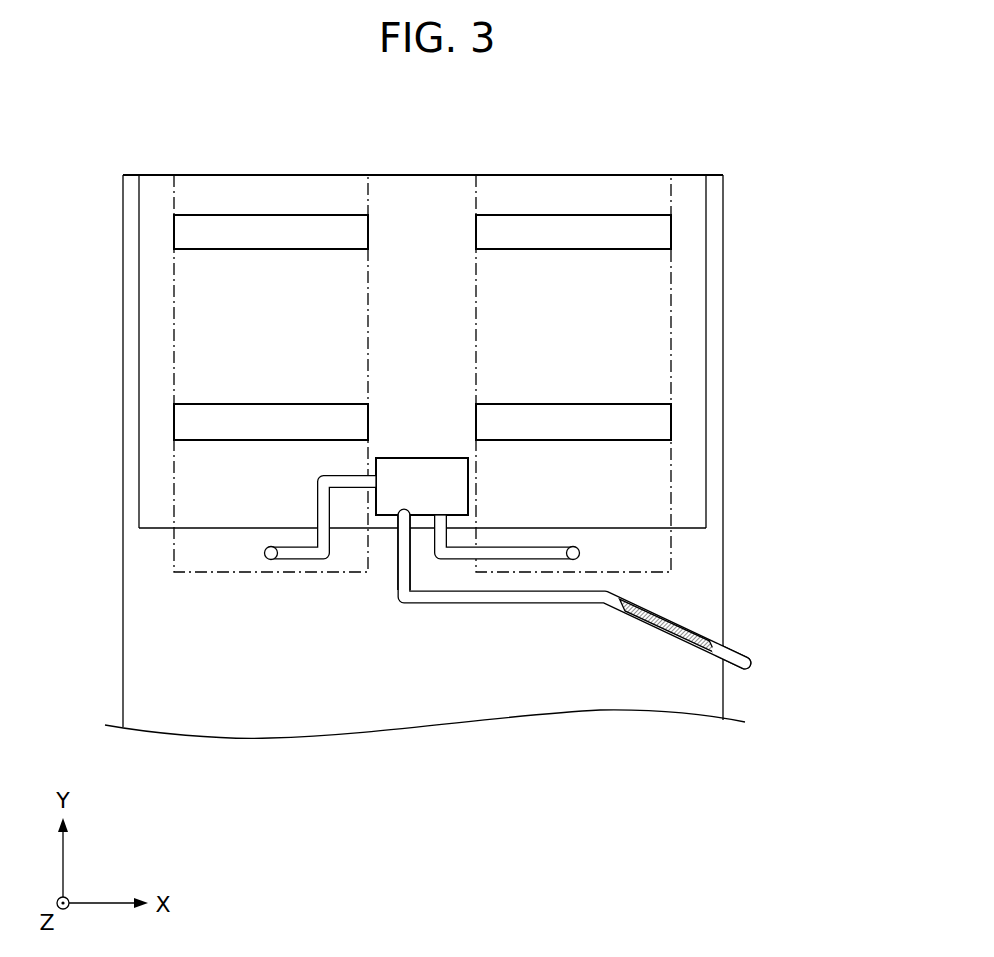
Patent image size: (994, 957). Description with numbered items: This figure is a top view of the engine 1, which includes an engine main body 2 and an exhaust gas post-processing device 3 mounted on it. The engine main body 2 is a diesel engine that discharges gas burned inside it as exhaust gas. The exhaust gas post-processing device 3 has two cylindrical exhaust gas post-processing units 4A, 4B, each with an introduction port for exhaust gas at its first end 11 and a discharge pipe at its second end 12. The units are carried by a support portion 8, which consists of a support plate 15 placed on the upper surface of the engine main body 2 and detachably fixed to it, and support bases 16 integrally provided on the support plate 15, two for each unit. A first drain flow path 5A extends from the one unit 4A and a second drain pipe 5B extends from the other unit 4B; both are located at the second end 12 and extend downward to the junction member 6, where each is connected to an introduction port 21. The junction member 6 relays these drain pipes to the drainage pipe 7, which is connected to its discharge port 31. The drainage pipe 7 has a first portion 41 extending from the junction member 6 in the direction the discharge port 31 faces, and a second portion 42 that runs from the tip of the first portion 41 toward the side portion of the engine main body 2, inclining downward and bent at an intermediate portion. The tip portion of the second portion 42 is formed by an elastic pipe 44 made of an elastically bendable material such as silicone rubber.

The engine 1 is at (189, 102).
The engine main body 2 is at (188, 703).
The exhaust gas post-processing device 3 is at (684, 154).
The exhaust gas post-processing unit 4A is at (161, 311).
The exhaust gas post-processing unit 4B is at (684, 290).
The first drain flow path 5A is at (290, 560).
The second drain pipe 5B is at (460, 560).
The junction member 6 is at (425, 458).
The drainage pipe 7 is at (749, 639).
The support portion 8 is at (124, 202).
The first end 11 is at (672, 193).
The second end 12 is at (672, 548).
The support plate 15 is at (139, 498).
The support base 16 is at (185, 230).
The introduction port 21 is at (375, 485).
The discharge port 31 is at (398, 530).
The first portion 41 is at (400, 573).
The second portion 42 is at (588, 603).
The elastic pipe 44 is at (660, 635).